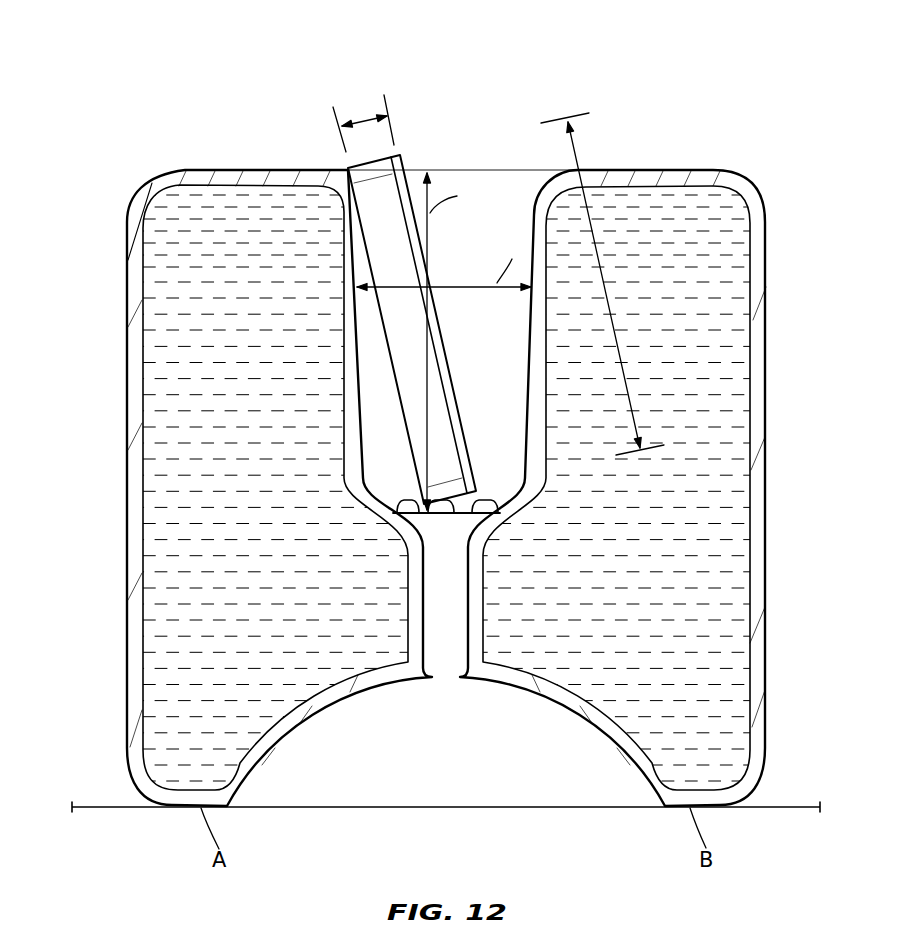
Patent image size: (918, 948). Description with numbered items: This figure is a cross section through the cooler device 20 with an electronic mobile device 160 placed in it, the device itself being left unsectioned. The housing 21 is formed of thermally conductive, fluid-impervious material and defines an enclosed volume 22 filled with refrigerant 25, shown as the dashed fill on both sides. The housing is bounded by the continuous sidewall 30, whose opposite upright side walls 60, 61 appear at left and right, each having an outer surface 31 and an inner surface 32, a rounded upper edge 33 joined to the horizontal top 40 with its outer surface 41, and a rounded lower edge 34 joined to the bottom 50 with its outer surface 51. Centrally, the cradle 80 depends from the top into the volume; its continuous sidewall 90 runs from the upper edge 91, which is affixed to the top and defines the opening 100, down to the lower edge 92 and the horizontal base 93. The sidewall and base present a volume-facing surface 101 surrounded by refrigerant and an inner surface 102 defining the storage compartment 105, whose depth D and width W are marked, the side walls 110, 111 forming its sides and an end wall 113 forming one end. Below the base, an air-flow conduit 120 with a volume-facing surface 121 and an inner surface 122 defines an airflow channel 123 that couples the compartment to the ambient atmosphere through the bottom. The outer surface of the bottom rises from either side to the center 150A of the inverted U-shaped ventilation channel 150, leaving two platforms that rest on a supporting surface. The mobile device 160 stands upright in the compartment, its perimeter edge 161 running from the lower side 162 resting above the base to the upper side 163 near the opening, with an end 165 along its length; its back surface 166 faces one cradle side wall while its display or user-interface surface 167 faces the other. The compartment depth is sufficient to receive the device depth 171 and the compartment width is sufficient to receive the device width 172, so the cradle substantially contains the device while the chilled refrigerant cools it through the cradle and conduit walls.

The cooler device 20 is at (727, 106).
The housing 21 is at (768, 217).
The enclosed volume 22 is at (281, 568).
The refrigerant 25 is at (149, 562).
The continuous sidewall 30 is at (767, 258).
The outer surface 31 is at (767, 290).
The inner surface 32 is at (745, 305).
The upper edge 33 is at (753, 187).
The lower edge 34 is at (763, 755).
The top 40 is at (657, 170).
The outer surface 41 is at (643, 170).
The bottom 50 is at (186, 807).
The outer surface 51 is at (267, 782).
The side wall 60 is at (768, 395).
The side wall 61 is at (127, 514).
The cradle 80 is at (496, 178).
The continuous sidewall 90 is at (537, 358).
The upper edge 91 is at (327, 169).
The lower edge 92 is at (497, 510).
The base 93 is at (477, 494).
The opening 100 is at (468, 174).
The volume-facing surface 101 is at (345, 280).
The inner surface 102 is at (531, 313).
The storage compartment 105 is at (478, 264).
The side wall 110 is at (536, 337).
The side wall 111 is at (361, 431).
The end wall 113 is at (510, 198).
The air-flow conduit 120 is at (485, 628).
The volume-facing surface 121 is at (485, 598).
The inner surface 122 is at (424, 580).
The airflow channel 123 is at (447, 645).
The ventilation channel 150 is at (466, 785).
The center 150A is at (464, 678).
The electronic mobile device 160 is at (403, 152).
The perimeter edge 161 is at (373, 225).
The side 162 is at (457, 517).
The side 163 is at (380, 157).
The end 165 is at (403, 315).
The back surface 166 is at (443, 328).
The display or user-interface surface 167 is at (390, 364).
The depth 171 is at (598, 252).
The width 172 is at (357, 122).